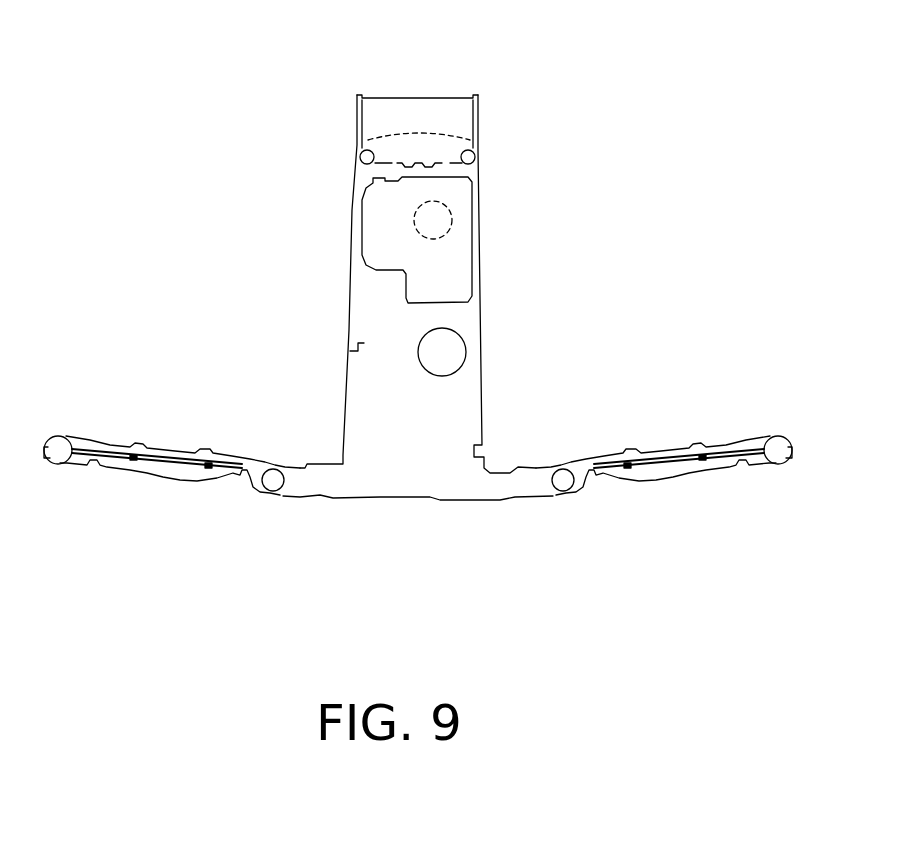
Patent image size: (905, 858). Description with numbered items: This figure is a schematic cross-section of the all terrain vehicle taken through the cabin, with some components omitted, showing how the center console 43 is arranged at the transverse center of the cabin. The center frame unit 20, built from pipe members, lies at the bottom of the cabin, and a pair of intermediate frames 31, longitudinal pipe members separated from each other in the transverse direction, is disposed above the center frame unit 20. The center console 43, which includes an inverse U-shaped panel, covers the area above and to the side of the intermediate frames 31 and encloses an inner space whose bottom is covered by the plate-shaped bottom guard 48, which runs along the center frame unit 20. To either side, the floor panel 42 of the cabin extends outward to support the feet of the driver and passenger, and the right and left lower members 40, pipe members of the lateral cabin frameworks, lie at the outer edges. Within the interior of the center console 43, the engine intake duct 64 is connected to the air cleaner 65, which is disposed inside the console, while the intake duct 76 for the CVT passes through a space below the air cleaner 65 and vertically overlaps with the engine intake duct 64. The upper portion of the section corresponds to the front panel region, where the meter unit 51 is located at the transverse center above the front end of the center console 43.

The center frame unit 20 is at (272, 483).
The intermediate frames 31 is at (360, 158).
The lower members 40 is at (58, 442).
The floor panel 42 is at (175, 448).
The center console 43 is at (349, 250).
The bottom guard 48 is at (432, 497).
The meter unit 51 is at (418, 98).
The engine intake duct 64 is at (450, 206).
The air cleaner 65 is at (458, 258).
The intake duct 76 is at (455, 355).